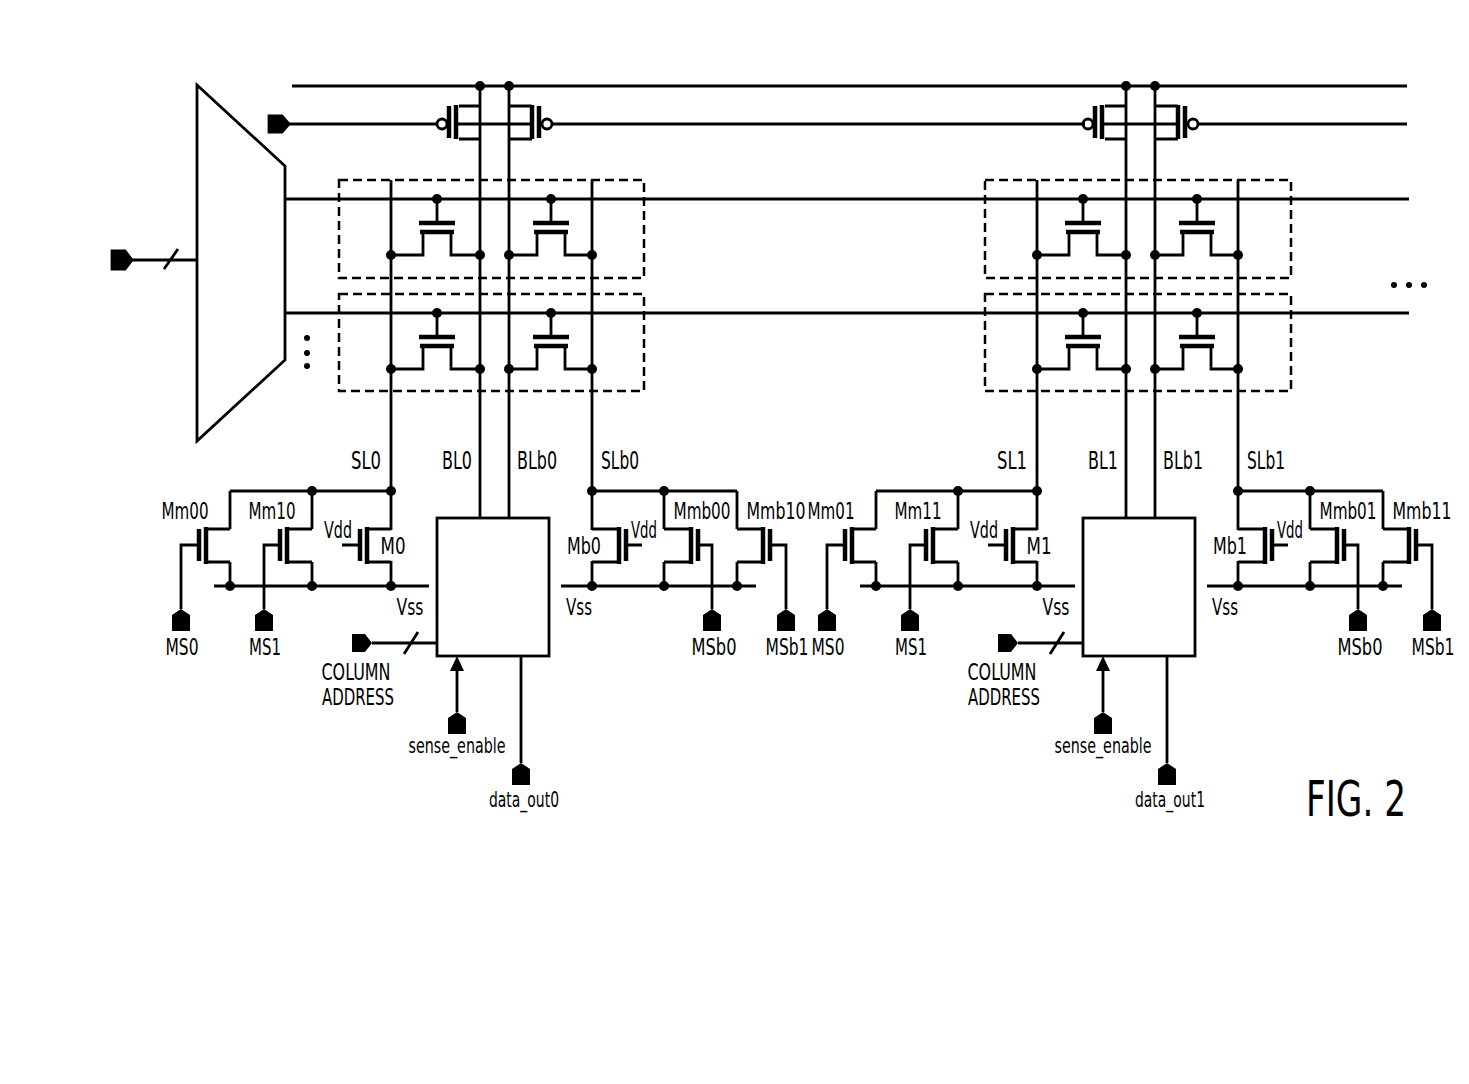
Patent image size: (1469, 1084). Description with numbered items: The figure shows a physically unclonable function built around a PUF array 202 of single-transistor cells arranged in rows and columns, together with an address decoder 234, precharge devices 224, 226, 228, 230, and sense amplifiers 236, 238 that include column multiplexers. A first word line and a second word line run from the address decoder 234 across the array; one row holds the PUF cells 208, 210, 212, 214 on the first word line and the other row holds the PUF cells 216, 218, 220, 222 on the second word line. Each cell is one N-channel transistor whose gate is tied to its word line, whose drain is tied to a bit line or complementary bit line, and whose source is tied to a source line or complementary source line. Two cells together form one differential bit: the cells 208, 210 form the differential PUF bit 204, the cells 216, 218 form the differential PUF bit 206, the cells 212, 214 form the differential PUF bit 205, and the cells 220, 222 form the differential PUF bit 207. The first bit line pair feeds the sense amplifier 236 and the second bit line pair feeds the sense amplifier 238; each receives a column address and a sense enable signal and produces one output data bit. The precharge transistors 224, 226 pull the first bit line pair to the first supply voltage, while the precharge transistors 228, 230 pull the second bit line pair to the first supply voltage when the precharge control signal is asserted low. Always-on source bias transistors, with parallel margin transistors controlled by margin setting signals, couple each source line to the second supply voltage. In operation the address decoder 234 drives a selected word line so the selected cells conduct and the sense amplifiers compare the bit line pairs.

The PUF array 202 is at (1430, 116).
The differential PUF bit 204 is at (632, 182).
The differential PUF bit 205 is at (1278, 182).
The differential PUF bit 206 is at (632, 394).
The differential PUF bit 207 is at (1277, 395).
The PUF cell 208 is at (419, 243).
The PUF cell 210 is at (558, 235).
The PUF cell 212 is at (1064, 243).
The PUF cell 214 is at (1204, 235).
The PUF cell 216 is at (437, 354).
The PUF cell 218 is at (539, 356).
The PUF cell 220 is at (1083, 354).
The PUF cell 222 is at (1185, 356).
The precharge transistor 224 is at (470, 103).
The precharge transistor 226 is at (520, 103).
The precharge transistor 228 is at (1116, 103).
The precharge transistor 230 is at (1166, 103).
The address decoder 234 is at (258, 305).
The sense amplifier 236 is at (477, 633).
The sense amplifier 238 is at (1123, 633).